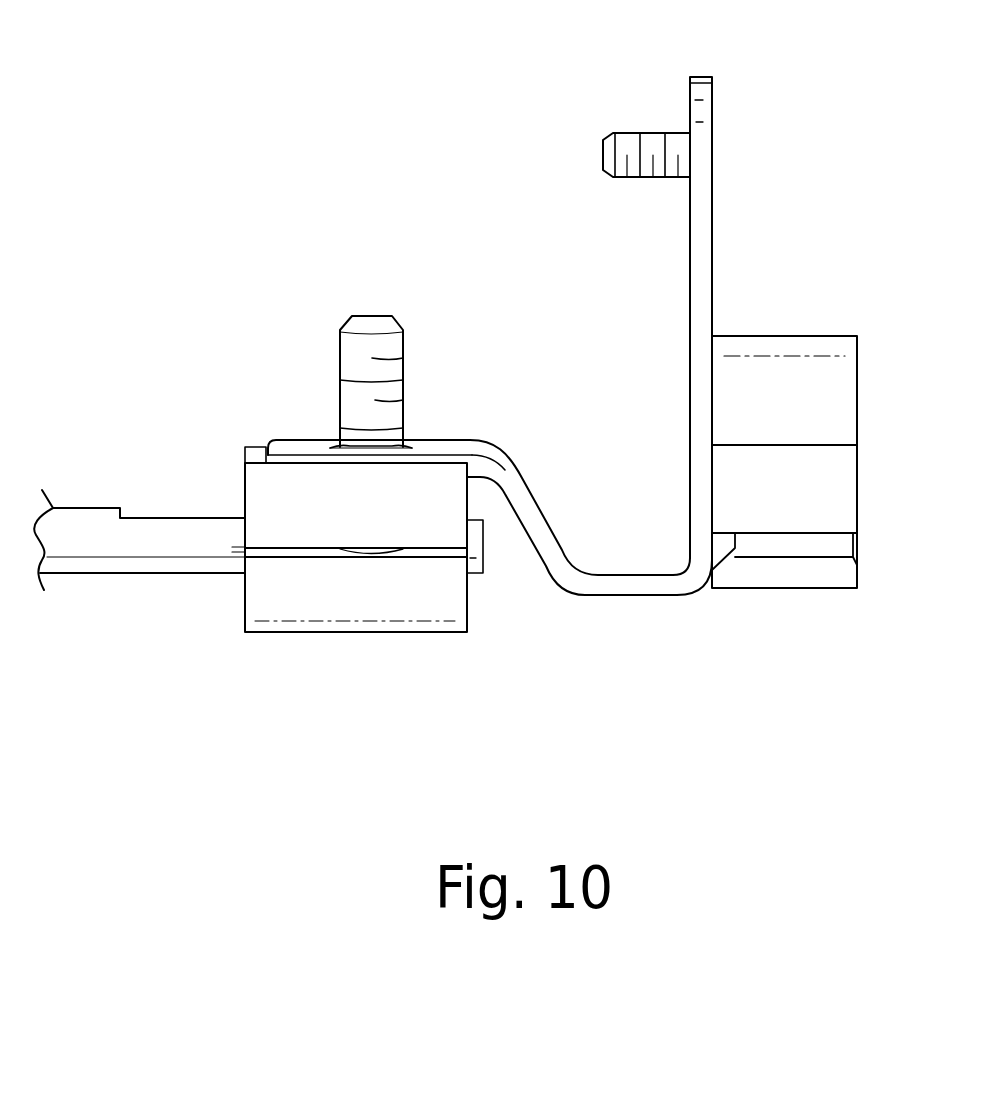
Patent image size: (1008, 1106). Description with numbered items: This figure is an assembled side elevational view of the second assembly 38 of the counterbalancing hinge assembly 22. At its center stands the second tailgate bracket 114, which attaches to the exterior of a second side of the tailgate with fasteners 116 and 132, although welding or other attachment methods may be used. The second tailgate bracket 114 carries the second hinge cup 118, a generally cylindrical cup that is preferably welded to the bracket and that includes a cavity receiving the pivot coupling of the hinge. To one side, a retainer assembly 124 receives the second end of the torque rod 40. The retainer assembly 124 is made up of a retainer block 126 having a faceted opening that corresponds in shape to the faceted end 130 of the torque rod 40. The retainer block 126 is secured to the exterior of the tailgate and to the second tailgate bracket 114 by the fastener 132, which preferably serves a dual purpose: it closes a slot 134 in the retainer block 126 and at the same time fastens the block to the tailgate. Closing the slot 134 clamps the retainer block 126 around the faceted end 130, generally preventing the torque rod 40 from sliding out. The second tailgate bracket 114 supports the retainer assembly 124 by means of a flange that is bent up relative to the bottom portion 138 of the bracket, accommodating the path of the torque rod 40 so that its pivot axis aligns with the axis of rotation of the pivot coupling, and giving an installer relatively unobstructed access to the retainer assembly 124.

The counterbalancing hinge assembly 22 is at (181, 262).
The second assembly 38 is at (747, 711).
The torque rod 40 is at (75, 528).
The second tailgate bracket 114 is at (702, 76).
The fastener 116 is at (643, 177).
The second hinge cup 118 is at (797, 353).
The retainer assembly 124 is at (222, 673).
The retainer block 126 is at (363, 633).
The faceted end 130 is at (476, 575).
The fastener 132 is at (392, 320).
The slot 134 is at (222, 550).
The bottom portion 138 is at (652, 600).